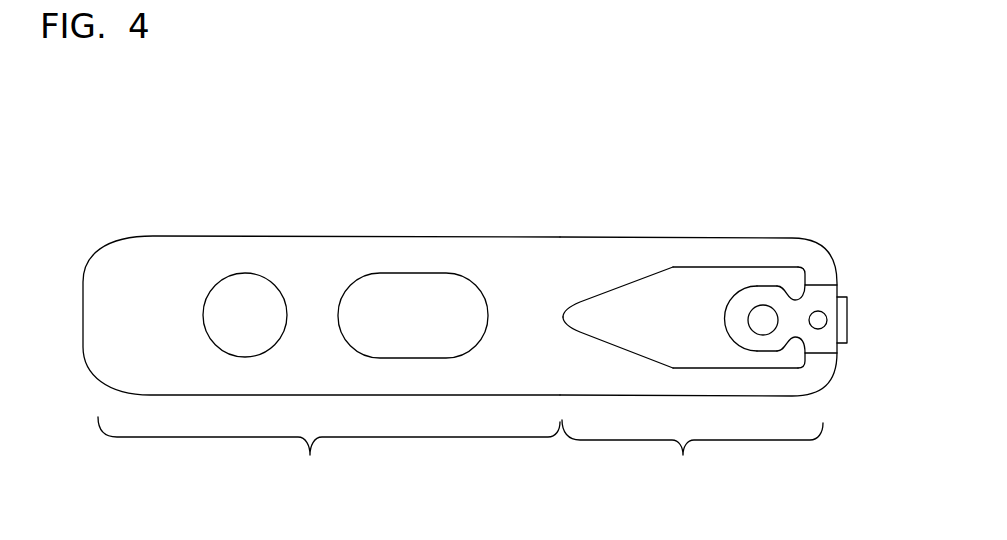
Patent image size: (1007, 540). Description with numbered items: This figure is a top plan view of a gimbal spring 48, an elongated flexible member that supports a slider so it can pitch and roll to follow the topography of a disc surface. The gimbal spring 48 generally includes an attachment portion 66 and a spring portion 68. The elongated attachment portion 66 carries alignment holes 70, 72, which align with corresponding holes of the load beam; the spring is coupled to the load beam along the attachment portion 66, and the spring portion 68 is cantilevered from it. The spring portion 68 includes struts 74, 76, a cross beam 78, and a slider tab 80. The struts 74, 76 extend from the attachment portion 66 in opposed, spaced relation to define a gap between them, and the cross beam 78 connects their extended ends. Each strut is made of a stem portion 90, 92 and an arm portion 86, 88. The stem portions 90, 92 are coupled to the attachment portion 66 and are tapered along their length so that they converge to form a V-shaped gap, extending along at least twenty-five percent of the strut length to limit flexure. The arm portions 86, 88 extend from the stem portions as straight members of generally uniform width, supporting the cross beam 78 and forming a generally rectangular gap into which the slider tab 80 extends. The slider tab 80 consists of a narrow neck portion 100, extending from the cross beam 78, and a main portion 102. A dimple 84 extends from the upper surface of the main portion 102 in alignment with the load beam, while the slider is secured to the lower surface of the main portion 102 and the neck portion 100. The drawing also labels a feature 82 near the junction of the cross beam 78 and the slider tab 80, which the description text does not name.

The gimbal spring 48 is at (460, 285).
The attachment portion 66 is at (321, 362).
The spring portion 68 is at (698, 364).
The alignment hole 70 is at (240, 275).
The alignment hole 72 is at (440, 278).
The strut 74 is at (732, 245).
The strut 76 is at (796, 387).
The cross beam 78 is at (840, 289).
The slider tab 80 is at (758, 288).
The shoulder 82 is at (818, 285).
The dimple 84 is at (748, 320).
The arm portion 86 is at (708, 255).
The arm portion 88 is at (702, 380).
The stem portion 90 is at (593, 260).
The stem portion 92 is at (608, 382).
The neck portion 100 is at (792, 339).
The main portion 102 is at (740, 346).